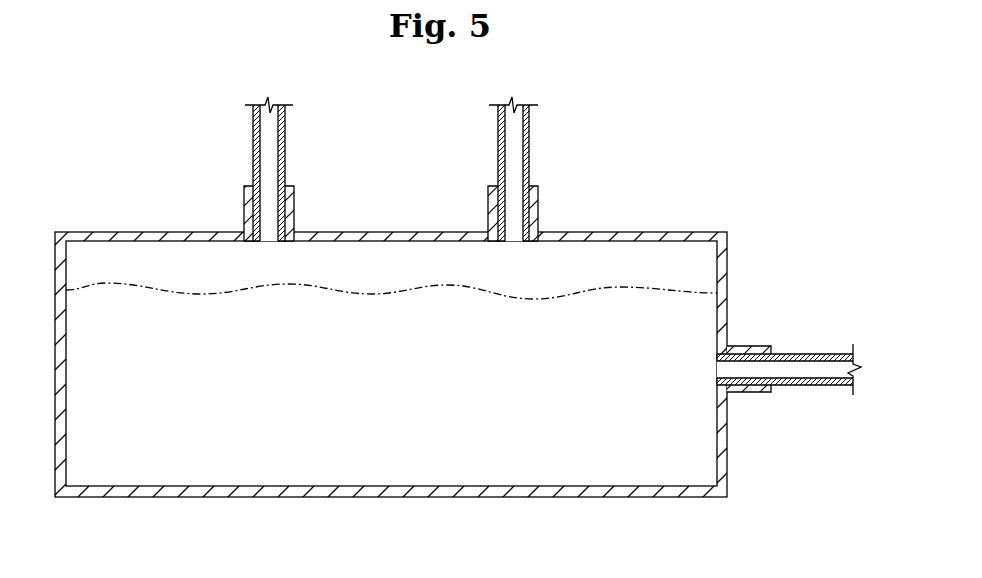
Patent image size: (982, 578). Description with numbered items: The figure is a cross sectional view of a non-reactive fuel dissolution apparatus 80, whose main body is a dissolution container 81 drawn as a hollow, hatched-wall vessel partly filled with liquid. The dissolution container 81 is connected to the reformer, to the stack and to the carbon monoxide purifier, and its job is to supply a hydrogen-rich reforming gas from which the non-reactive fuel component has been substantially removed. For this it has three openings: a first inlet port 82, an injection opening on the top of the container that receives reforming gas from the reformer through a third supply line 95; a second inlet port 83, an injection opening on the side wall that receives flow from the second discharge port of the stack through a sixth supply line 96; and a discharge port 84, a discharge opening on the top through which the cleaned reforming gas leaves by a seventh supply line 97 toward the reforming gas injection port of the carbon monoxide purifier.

The dissolution apparatus 80 is at (779, 178).
The dissolution container 81 is at (331, 497).
The first inlet port 82 is at (295, 195).
The second inlet port 83 is at (749, 347).
The discharge port 84 is at (540, 195).
The third supply line 95 is at (287, 140).
The sixth supply line 96 is at (798, 353).
The seventh supply line 97 is at (531, 140).